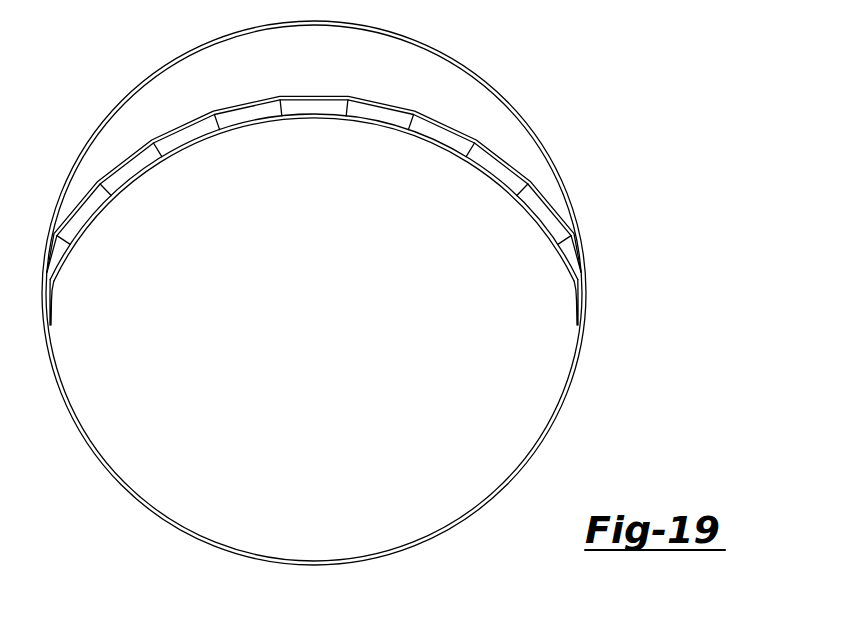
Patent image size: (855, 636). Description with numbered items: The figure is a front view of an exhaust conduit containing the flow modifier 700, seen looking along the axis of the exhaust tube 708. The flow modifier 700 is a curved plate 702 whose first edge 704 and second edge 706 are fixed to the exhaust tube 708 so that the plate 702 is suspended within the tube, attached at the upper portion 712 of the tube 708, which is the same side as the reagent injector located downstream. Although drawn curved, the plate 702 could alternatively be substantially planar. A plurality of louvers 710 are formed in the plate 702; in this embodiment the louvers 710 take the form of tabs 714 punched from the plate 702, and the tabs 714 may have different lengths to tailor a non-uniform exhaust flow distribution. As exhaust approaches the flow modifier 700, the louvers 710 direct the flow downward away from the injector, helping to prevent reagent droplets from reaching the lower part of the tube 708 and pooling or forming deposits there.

The flow modifier 700 is at (384, 163).
The curved plate 702 is at (300, 122).
The first edge 704 is at (50, 325).
The second edge 706 is at (578, 325).
The exhaust tube 708 is at (437, 538).
The louvers 710 is at (188, 135).
The upper portion 712 is at (383, 35).
The tabs 714 is at (78, 210).